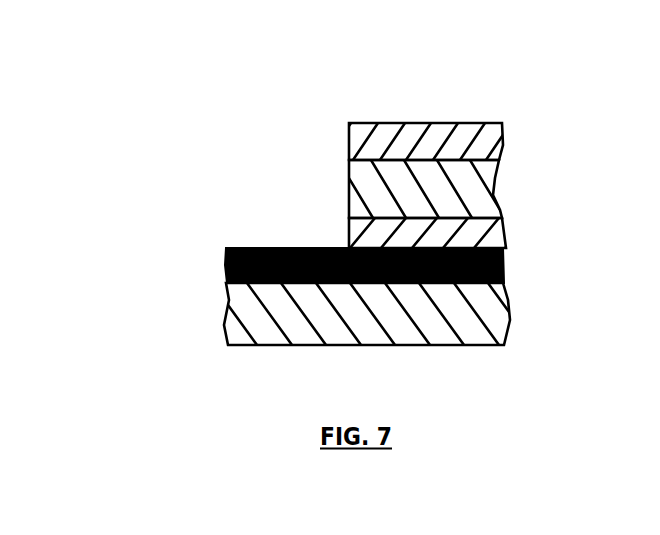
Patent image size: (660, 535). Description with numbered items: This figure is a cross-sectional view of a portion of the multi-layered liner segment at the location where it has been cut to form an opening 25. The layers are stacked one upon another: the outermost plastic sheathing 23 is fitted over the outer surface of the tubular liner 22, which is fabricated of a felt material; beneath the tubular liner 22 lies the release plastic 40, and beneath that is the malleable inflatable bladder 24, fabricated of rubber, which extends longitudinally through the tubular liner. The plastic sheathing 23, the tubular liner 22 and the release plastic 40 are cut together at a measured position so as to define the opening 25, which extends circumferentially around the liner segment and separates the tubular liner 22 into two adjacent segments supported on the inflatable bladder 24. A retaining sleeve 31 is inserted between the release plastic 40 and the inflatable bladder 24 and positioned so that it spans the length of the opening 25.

The opening 25 is at (279, 104).
The plastic sheathing 23 is at (437, 131).
The tubular liner 22 is at (498, 181).
The release plastic 40 is at (510, 233).
The retaining sleeve 31 is at (505, 271).
The malleable inflatable bladder 24 is at (455, 347).